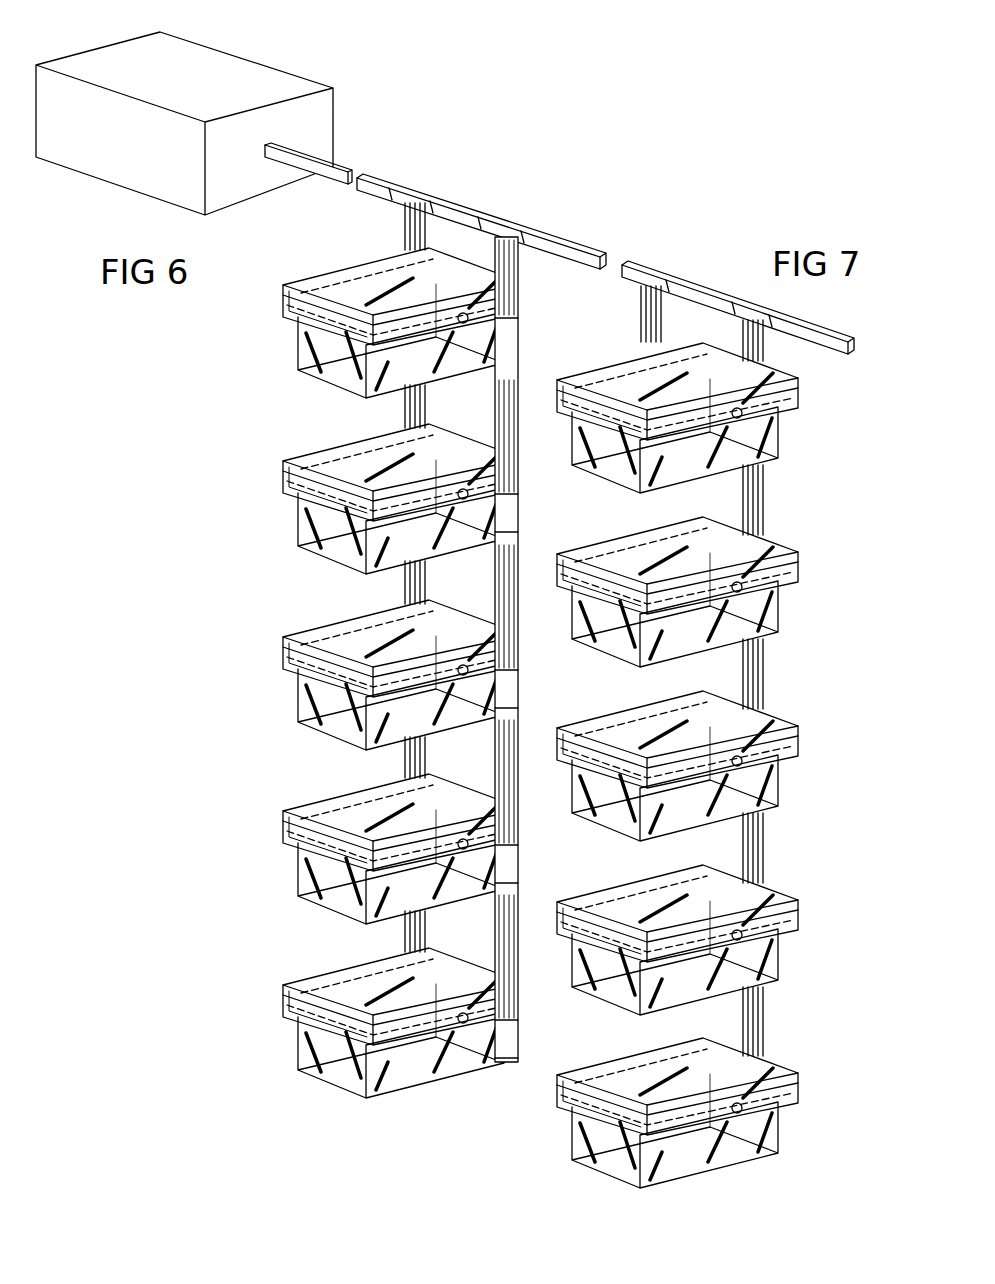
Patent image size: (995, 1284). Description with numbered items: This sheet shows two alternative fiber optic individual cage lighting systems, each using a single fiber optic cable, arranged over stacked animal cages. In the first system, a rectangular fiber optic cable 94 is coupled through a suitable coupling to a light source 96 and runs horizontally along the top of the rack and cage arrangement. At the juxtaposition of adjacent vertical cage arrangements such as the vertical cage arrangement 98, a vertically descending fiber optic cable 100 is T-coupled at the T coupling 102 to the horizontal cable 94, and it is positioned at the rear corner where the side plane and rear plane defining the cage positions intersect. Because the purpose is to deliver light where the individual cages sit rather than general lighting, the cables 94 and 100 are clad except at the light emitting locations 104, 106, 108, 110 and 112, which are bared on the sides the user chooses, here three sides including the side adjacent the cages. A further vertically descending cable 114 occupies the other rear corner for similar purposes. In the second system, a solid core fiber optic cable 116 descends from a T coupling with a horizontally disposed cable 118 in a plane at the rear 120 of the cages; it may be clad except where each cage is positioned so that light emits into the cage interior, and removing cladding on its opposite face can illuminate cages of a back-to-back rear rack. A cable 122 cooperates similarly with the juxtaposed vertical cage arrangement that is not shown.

In FIG. 6, the light source 96 is at (263, 74).
In FIG. 6, the rectangular fiber optic cable 94 is at (340, 165).
In FIG. 6, the T coupling 102 is at (497, 228).
In FIG. 6, the further vertically descending cable 114 is at (406, 240).
In FIG. 6, the vertical cage arrangement 98 is at (332, 699).
In FIG. 6, the vertically descending fiber optic cable 100 is at (513, 290).
In FIG. 6, the light emitting location 104 is at (500, 350).
In FIG. 6, the light emitting location 106 is at (500, 522).
In FIG. 6, the light emitting location 108 is at (500, 706).
In FIG. 6, the light emitting location 110 is at (500, 880).
In FIG. 6, the light emitting location 112 is at (500, 1058).
In FIG. 7, the horizontally disposed cable 118 is at (710, 292).
In FIG. 7, the cable 122 is at (641, 320).
In FIG. 7, the solid core fiber optic cable 116 is at (775, 351).
In FIG. 7, the rear of the cages 120 is at (800, 427).